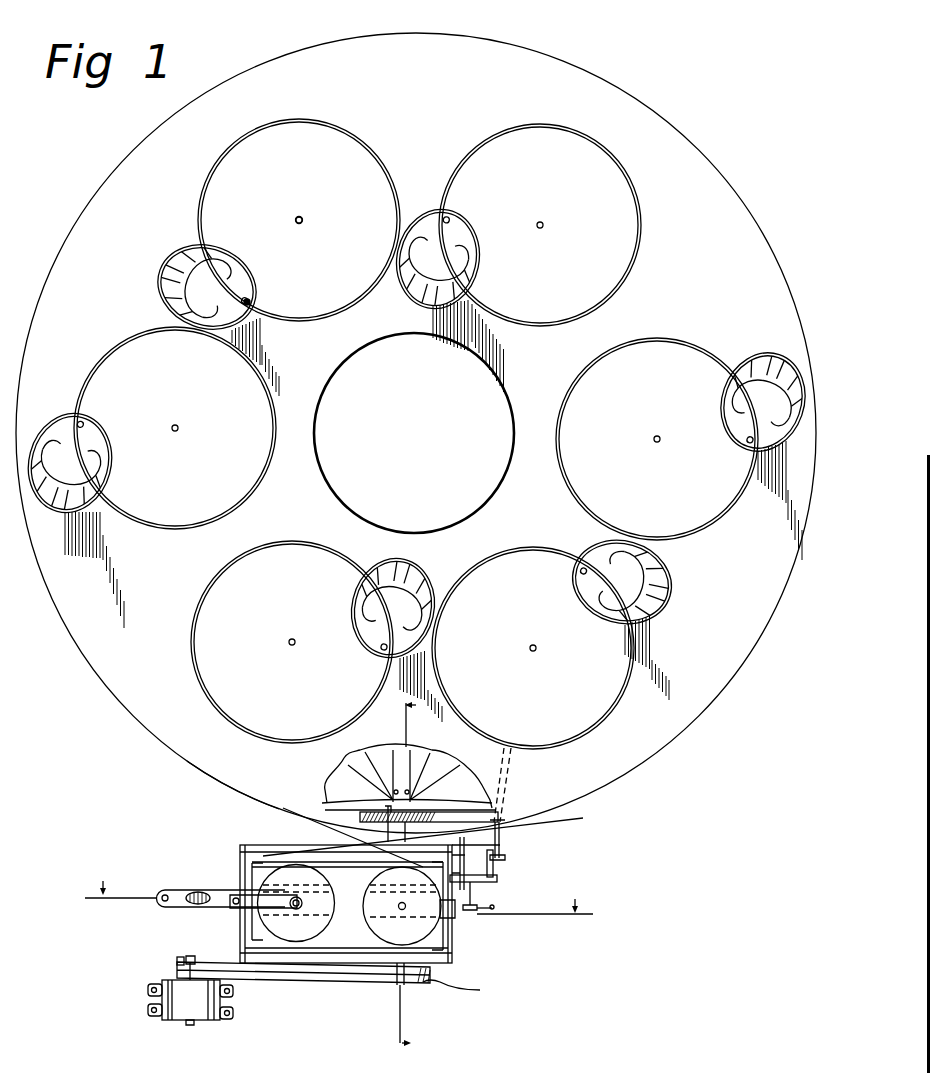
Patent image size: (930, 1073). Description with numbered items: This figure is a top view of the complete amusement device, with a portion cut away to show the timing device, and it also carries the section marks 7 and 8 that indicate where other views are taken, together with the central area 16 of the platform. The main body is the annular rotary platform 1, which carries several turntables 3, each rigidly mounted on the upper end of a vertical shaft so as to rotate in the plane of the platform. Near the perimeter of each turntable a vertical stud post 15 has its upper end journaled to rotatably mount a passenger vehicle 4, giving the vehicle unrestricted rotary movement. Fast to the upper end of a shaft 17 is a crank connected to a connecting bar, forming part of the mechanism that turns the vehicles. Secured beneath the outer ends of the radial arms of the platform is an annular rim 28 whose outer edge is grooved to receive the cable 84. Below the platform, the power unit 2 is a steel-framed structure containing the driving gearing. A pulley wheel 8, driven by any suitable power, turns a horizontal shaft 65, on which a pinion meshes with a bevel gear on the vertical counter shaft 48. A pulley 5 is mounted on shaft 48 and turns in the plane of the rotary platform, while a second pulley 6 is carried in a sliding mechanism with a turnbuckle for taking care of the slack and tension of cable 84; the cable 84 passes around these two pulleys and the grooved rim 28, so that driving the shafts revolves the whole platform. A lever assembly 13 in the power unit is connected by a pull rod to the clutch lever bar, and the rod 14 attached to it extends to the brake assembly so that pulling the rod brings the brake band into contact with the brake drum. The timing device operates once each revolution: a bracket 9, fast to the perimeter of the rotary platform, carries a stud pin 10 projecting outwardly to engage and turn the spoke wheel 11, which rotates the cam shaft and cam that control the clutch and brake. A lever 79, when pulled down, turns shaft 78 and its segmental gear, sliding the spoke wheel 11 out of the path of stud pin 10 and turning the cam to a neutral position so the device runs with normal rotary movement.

The rotary platform 1 is at (120, 195).
The power unit 2 is at (247, 847).
The turntable 3 is at (258, 150).
The vehicle 4 is at (172, 255).
The pulley 5 is at (420, 930).
The pulley 6 is at (283, 878).
The arm 7 is at (193, 908).
The pulley wheel 8 is at (339, 934).
The bracket 9 is at (432, 837).
The stud pin 10 is at (303, 809).
The spoke wheel 11 is at (500, 838).
The lever assembly 13 is at (485, 887).
The rod 14 is at (507, 853).
The stud post 15 is at (251, 302).
The central disc 16 is at (414, 433).
The shaft 17 is at (303, 220).
The annular rim 28 is at (220, 787).
The vertical counter shaft 48 is at (406, 906).
The horizontal shaft 65 is at (400, 987).
The shaft 78 is at (494, 906).
The lever 79 is at (503, 868).
The cable 84 is at (285, 826).